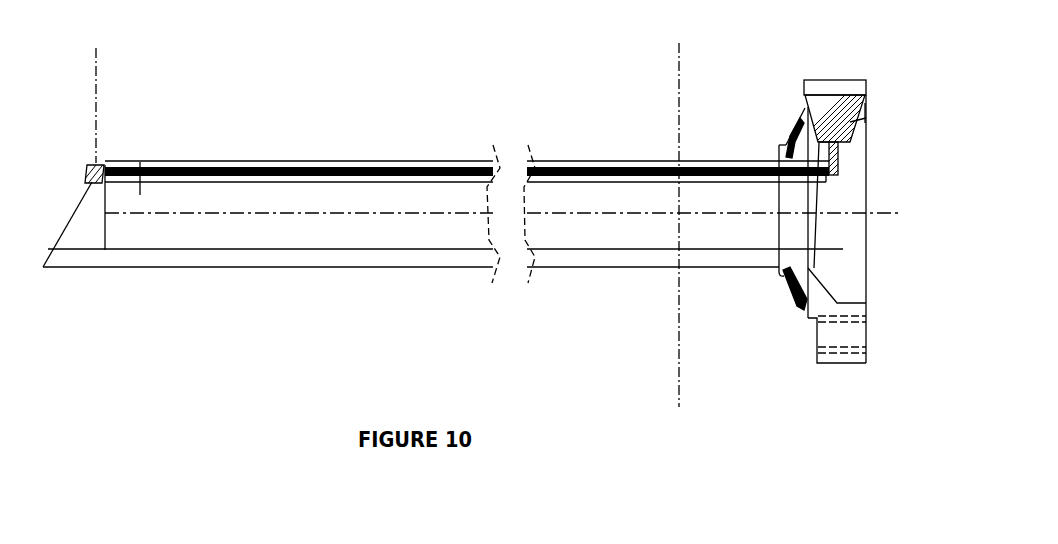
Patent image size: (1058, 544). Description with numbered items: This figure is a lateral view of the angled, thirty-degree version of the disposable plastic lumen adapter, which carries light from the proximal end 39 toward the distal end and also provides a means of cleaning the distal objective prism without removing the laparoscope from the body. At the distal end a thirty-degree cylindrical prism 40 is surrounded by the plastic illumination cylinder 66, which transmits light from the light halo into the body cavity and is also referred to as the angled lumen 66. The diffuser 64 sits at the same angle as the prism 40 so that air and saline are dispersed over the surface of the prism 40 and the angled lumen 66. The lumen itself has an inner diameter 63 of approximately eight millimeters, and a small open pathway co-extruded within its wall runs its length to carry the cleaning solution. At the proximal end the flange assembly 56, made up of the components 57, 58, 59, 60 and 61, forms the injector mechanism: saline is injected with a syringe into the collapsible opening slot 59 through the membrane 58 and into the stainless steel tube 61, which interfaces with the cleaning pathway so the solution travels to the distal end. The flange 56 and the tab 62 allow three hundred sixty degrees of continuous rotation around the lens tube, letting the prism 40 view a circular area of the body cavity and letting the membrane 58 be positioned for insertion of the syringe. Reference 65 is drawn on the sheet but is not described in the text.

The proximal end 39 is at (786, 283).
The 30 degree cylindrical prism 40 is at (85, 233).
The flange assembly 56 is at (788, 132).
The flange assembly component 57 is at (818, 120).
The membrane 58 is at (820, 90).
The slot 59 is at (835, 80).
The flange assembly component 60 is at (859, 80).
The stainless steel tube 61 is at (840, 165).
The tab 62 is at (830, 337).
The inner diameter 63 is at (230, 250).
The diffuser 64 is at (78, 207).
The heater band 65 is at (288, 170).
The plastic illumination cylinder 66 is at (657, 162).